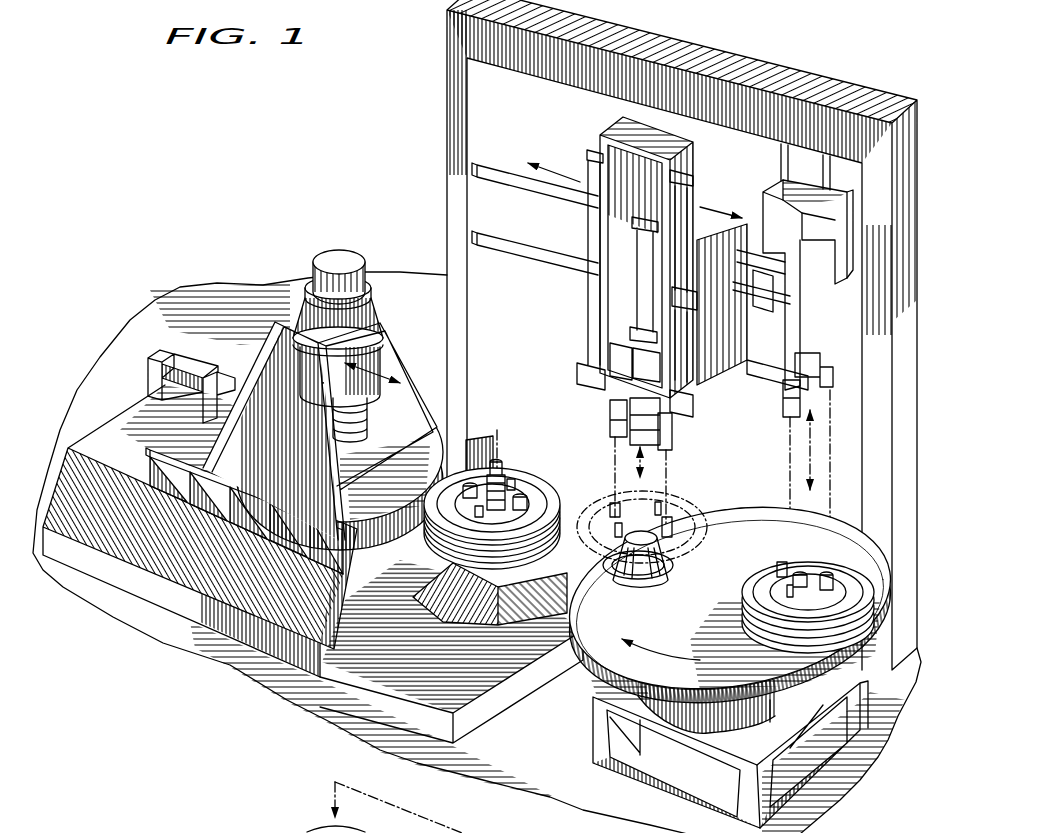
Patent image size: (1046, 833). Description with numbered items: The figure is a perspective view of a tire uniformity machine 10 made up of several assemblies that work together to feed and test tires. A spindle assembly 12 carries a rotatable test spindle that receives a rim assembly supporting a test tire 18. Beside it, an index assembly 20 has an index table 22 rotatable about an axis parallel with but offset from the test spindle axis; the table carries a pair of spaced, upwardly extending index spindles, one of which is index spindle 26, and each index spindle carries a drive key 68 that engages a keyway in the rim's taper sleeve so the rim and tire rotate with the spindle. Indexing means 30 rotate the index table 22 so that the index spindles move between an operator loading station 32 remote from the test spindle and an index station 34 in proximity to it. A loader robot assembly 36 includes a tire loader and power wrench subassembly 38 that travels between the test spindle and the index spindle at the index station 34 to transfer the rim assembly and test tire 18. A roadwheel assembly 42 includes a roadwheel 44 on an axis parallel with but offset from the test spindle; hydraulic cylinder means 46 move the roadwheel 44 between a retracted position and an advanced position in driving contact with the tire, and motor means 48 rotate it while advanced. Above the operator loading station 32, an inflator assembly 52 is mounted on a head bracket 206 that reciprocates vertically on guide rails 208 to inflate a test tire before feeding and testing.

The tire uniformity machine 10 is at (323, 132).
The spindle assembly 12 is at (437, 575).
The test tire 18 is at (863, 580).
The index assembly 20 is at (593, 673).
The index table 22 is at (837, 550).
The index spindle 26 is at (590, 543).
The indexing means 30 is at (683, 717).
The operator loading station 32 is at (865, 640).
The index station 34 is at (730, 605).
The loader robot assembly 36 is at (440, 113).
The tire loader and power wrench subassembly 38 is at (577, 338).
The roadwheel assembly 42 is at (257, 338).
The roadwheel 44 is at (360, 588).
The hydraulic cylinder means 46 is at (183, 363).
The motor means 48 is at (307, 272).
The inflator assembly 52 is at (850, 348).
The drive key 68 is at (672, 574).
The head bracket 206 is at (843, 268).
The guide rails 208 is at (832, 170).